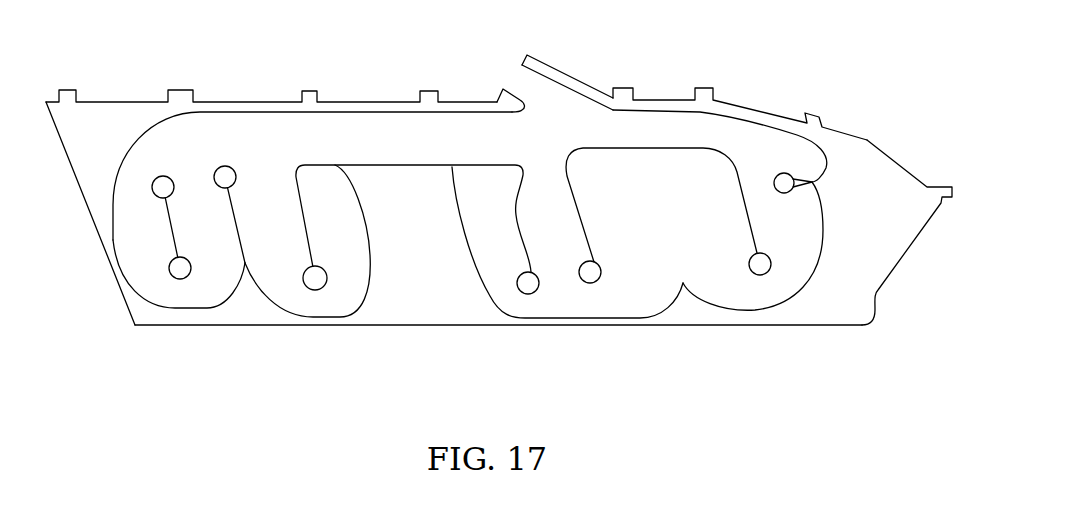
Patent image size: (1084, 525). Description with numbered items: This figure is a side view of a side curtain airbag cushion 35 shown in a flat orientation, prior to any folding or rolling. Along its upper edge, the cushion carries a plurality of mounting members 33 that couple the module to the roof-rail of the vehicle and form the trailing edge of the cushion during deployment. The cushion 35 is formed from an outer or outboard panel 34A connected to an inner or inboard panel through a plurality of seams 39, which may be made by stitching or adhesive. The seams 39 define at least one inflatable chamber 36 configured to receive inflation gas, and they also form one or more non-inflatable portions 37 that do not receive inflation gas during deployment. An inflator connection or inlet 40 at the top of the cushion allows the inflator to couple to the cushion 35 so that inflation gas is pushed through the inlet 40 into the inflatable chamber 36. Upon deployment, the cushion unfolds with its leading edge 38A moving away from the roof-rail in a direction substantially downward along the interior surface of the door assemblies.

The mounting members 33 is at (177, 90).
The outboard panel 34A is at (577, 112).
The airbag cushion 35 is at (783, 98).
The inflatable chamber 36 is at (193, 249).
The non-inflatable portions 37 is at (96, 230).
The leading edge 38A is at (798, 327).
The seams 39 is at (407, 168).
The inflator connection 40 is at (514, 80).